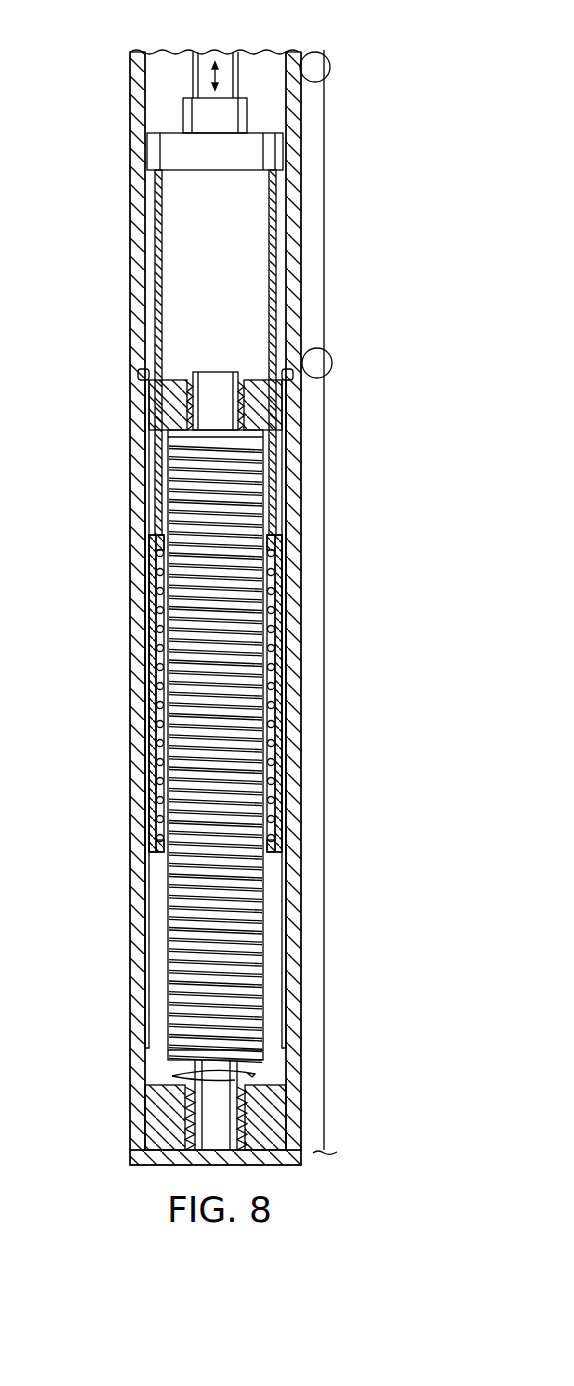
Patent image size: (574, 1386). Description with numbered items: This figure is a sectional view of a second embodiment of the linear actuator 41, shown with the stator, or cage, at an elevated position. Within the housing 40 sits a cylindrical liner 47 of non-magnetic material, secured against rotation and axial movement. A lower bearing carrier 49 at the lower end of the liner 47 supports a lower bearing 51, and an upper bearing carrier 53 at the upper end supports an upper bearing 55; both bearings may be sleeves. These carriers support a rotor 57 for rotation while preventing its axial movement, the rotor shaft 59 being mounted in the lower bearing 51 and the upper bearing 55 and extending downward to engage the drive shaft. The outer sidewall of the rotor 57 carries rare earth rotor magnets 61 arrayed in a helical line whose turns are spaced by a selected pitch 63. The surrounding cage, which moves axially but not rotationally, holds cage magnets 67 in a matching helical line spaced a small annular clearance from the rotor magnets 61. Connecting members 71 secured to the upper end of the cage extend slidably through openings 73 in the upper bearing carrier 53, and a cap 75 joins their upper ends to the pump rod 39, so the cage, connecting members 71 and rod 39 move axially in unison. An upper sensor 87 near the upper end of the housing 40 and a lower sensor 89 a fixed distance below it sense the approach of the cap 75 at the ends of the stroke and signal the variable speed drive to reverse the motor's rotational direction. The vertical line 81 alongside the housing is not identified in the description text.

The pump rod 39 is at (203, 77).
The housing 40 is at (298, 1000).
The linear actuator 41 is at (104, 603).
The cylindrical liner 47 is at (146, 912).
The lower bearing carrier 49 is at (163, 1123).
The lower bearing 51 is at (250, 1101).
The upper bearing carrier 53 is at (165, 405).
The upper bearing 55 is at (247, 392).
The rotor 57 is at (267, 888).
The rotor shaft 59 is at (208, 403).
The rotor magnets 61 is at (252, 797).
The pitch 63 is at (280, 615).
The cage magnets 67 is at (158, 757).
The connecting members 71 is at (157, 250).
The openings 73 is at (283, 410).
The cap 75 is at (153, 156).
The reference line 81 is at (326, 196).
The upper sensor 87 is at (330, 60).
The lower sensor 89 is at (332, 356).